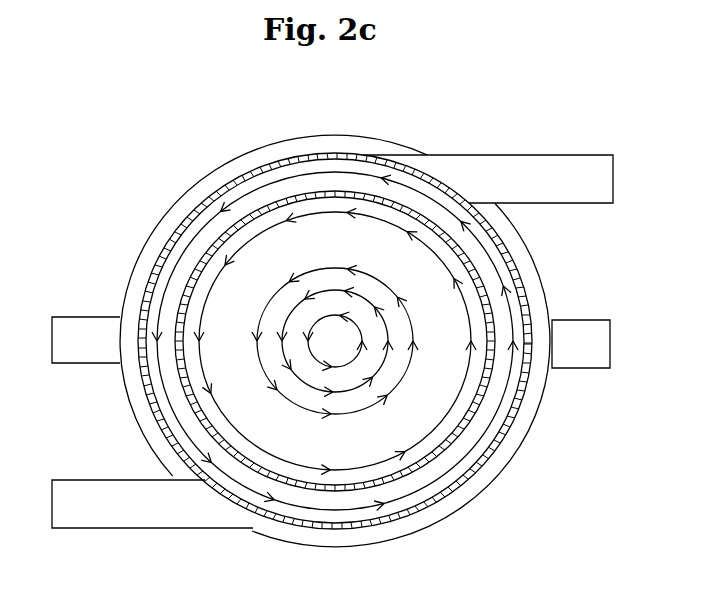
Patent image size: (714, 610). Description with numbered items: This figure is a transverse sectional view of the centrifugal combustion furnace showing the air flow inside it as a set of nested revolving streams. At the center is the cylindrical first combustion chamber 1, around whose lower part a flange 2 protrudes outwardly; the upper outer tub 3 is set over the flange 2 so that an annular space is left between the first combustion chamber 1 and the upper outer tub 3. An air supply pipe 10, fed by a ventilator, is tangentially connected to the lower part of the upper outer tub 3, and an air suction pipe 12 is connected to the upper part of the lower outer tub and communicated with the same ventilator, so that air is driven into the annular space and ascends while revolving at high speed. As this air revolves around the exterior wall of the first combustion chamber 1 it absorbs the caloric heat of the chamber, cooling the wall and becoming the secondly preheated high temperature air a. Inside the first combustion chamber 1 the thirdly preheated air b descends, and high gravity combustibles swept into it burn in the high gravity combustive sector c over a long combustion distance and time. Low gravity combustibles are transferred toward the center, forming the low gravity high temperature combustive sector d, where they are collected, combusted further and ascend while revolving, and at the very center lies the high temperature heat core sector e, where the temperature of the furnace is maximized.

The first combustion chamber 1 is at (193, 313).
The flange 2 is at (157, 222).
The upper outer tub 3 is at (203, 203).
The air supply pipe 10 is at (102, 532).
The air suction pipe 12 is at (592, 318).
The secondly preheated high temperature air a is at (337, 512).
The thirdly preheated air b is at (337, 471).
The high gravity combustive sector c is at (337, 442).
The low gravity high temperature combustive sector d is at (337, 380).
The high temperature heat core sector e is at (337, 343).